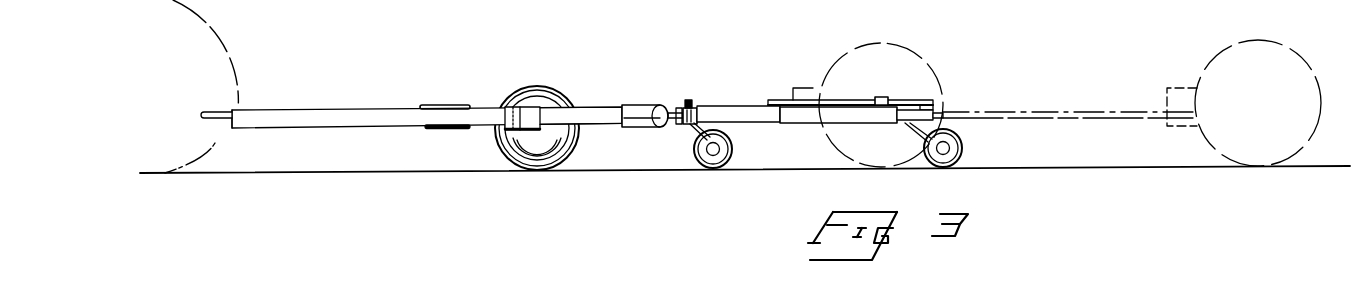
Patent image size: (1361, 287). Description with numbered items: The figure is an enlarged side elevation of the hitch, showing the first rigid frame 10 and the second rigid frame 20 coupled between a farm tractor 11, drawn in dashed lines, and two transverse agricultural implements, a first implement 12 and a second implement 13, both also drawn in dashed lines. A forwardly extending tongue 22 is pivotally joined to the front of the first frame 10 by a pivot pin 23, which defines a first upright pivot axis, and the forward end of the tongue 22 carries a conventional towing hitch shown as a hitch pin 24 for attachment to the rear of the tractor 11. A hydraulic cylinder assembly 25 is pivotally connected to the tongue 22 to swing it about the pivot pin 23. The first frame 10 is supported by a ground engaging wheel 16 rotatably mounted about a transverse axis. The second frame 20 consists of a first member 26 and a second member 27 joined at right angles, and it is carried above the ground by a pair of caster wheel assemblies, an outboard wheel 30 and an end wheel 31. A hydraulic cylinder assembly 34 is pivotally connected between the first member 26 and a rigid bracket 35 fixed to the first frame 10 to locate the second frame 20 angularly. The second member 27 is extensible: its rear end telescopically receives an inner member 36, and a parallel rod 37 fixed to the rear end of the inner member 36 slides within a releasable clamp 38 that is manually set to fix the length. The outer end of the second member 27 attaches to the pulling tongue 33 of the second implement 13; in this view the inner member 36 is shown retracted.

The first rigid frame 10 is at (322, 104).
The farm tractor 11 is at (203, 32).
The first transverse agricultural implement 12 is at (887, 52).
The second agricultural implement 13 is at (1283, 52).
The ground engaging wheel 16 is at (558, 165).
The second rigid frame 20 is at (729, 103).
The tongue 22 is at (370, 130).
The pivot pin 23 is at (500, 128).
The hitch pin 24 is at (208, 118).
The hydraulic cylinder assembly 25 is at (462, 105).
The first member 26 is at (691, 108).
The second member 27 is at (797, 126).
The outboard wheel 30 is at (732, 168).
The end wheel 31 is at (962, 163).
The pulling tongue 33 is at (1007, 110).
The hydraulic cylinder assembly 34 is at (636, 105).
The rigid bracket 35 is at (608, 82).
The inner member 36 is at (912, 127).
The parallel rod 37 is at (854, 86).
The releasable clamp 38 is at (899, 87).